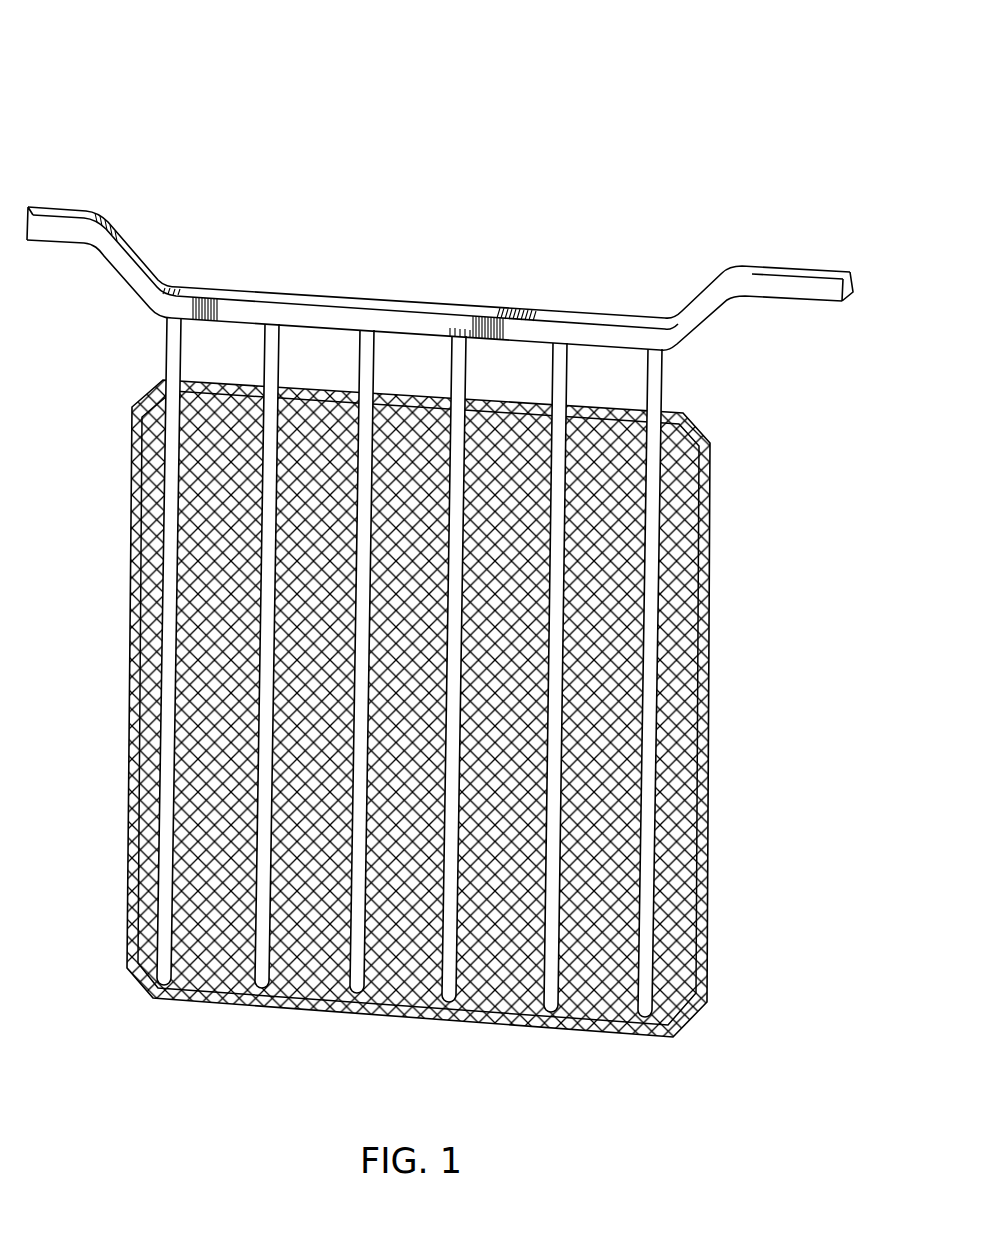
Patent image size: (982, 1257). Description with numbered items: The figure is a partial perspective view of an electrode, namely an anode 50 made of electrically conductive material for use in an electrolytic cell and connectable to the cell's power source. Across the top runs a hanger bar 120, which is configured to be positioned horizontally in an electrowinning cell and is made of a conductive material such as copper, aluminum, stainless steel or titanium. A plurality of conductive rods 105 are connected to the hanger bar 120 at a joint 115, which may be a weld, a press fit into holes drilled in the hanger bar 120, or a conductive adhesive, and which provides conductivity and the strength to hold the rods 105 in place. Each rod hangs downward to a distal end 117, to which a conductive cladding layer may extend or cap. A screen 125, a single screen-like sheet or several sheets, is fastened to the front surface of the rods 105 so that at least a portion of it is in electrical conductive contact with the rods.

The anode 50 is at (231, 100).
The conductive rods 105 is at (167, 352).
The joint 115 is at (698, 350).
The distal end 117 is at (152, 1000).
The hanger bar 120 is at (440, 278).
The screen 125 is at (381, 736).